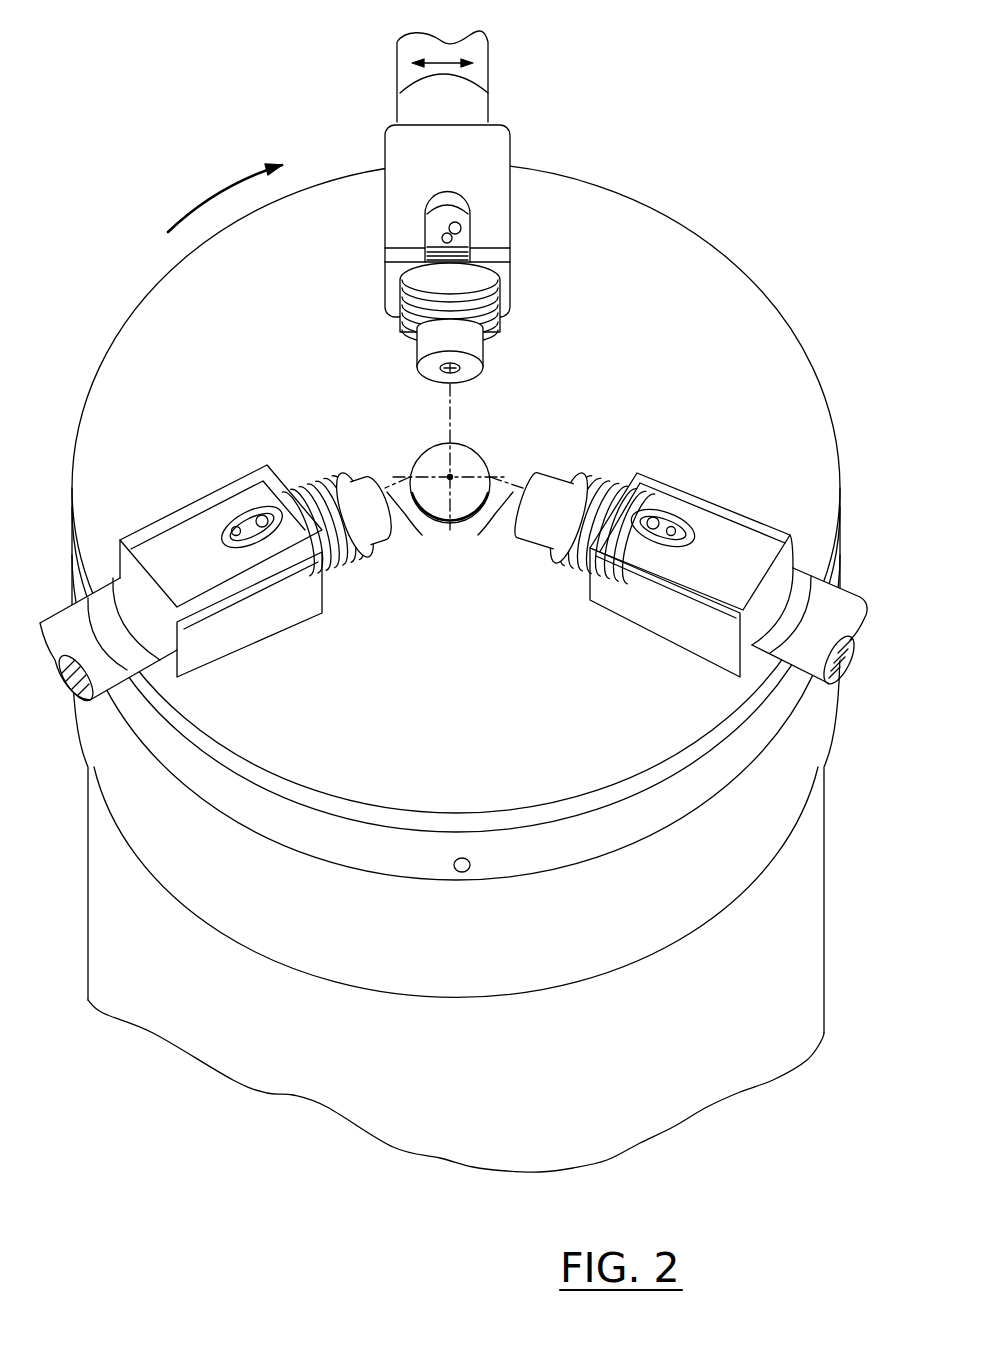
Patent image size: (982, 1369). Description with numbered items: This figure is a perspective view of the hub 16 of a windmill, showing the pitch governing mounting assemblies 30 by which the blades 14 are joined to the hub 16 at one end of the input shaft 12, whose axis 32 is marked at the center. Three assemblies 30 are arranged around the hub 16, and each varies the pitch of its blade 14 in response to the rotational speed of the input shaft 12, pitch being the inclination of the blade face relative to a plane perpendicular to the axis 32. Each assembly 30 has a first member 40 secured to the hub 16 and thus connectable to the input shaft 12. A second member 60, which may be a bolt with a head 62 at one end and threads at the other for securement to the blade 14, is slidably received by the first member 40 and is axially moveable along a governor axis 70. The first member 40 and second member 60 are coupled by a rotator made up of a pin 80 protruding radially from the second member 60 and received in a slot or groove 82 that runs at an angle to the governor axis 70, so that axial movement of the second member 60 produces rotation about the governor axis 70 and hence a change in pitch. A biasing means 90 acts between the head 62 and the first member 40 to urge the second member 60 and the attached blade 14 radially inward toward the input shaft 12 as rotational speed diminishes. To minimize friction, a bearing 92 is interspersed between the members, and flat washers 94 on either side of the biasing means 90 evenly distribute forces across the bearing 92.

The input shaft 12 is at (456, 497).
The blades 14 is at (407, 47).
The hub 16 is at (466, 727).
The pitch governing mounting assembly 30 is at (453, 415).
The axis of the input shaft 32 is at (449, 477).
The first member 40 is at (392, 232).
The second member 60 is at (436, 434).
The head 62 is at (477, 368).
The governor axis 70 is at (453, 415).
The pin 80 is at (447, 235).
The slot or groove 82 is at (462, 225).
The biasing means 90 is at (400, 298).
The bearing 92 is at (433, 250).
The flat washers 94 is at (470, 243).